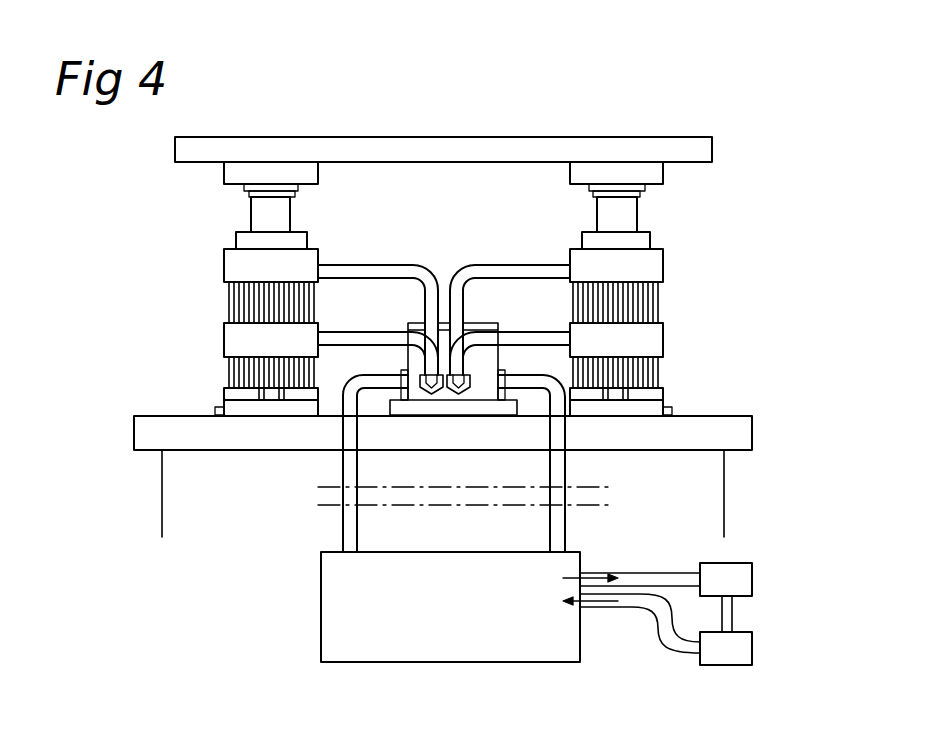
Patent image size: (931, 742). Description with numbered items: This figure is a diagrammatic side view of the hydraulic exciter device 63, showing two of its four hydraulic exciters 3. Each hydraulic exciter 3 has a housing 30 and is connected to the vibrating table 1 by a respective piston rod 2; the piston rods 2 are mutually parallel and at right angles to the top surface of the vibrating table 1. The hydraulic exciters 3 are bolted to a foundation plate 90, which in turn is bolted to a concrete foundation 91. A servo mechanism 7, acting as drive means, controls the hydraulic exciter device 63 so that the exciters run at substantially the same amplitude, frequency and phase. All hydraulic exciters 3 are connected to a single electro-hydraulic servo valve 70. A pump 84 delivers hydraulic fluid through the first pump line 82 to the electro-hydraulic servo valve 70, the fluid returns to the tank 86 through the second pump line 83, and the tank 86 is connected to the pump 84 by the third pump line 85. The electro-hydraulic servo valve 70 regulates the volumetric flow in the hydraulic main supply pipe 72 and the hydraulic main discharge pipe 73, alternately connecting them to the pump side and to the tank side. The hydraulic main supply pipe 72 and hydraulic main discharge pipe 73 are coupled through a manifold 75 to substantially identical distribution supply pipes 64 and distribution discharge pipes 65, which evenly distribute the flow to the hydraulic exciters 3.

The vibrating table 1 is at (348, 152).
The piston rod 2 is at (262, 211).
The hydraulic exciter 3 is at (680, 261).
The servo mechanism 7 is at (396, 518).
The housing 30 is at (233, 262).
The hydraulic exciter device 63 is at (197, 330).
The distribution supply pipe 64 is at (349, 271).
The distribution discharge pipe 65 is at (347, 338).
The electro-hydraulic servo valve 70 is at (373, 617).
The hydraulic main supply pipe 72 is at (350, 530).
The hydraulic main discharge pipe 73 is at (558, 530).
The manifold 75 is at (474, 393).
The first pump line 82 is at (647, 604).
The second pump line 83 is at (657, 578).
The pump 84 is at (733, 650).
The third pump line 85 is at (727, 613).
The tank 86 is at (737, 572).
The foundation plate 90 is at (143, 432).
The concrete foundation 91 is at (185, 508).